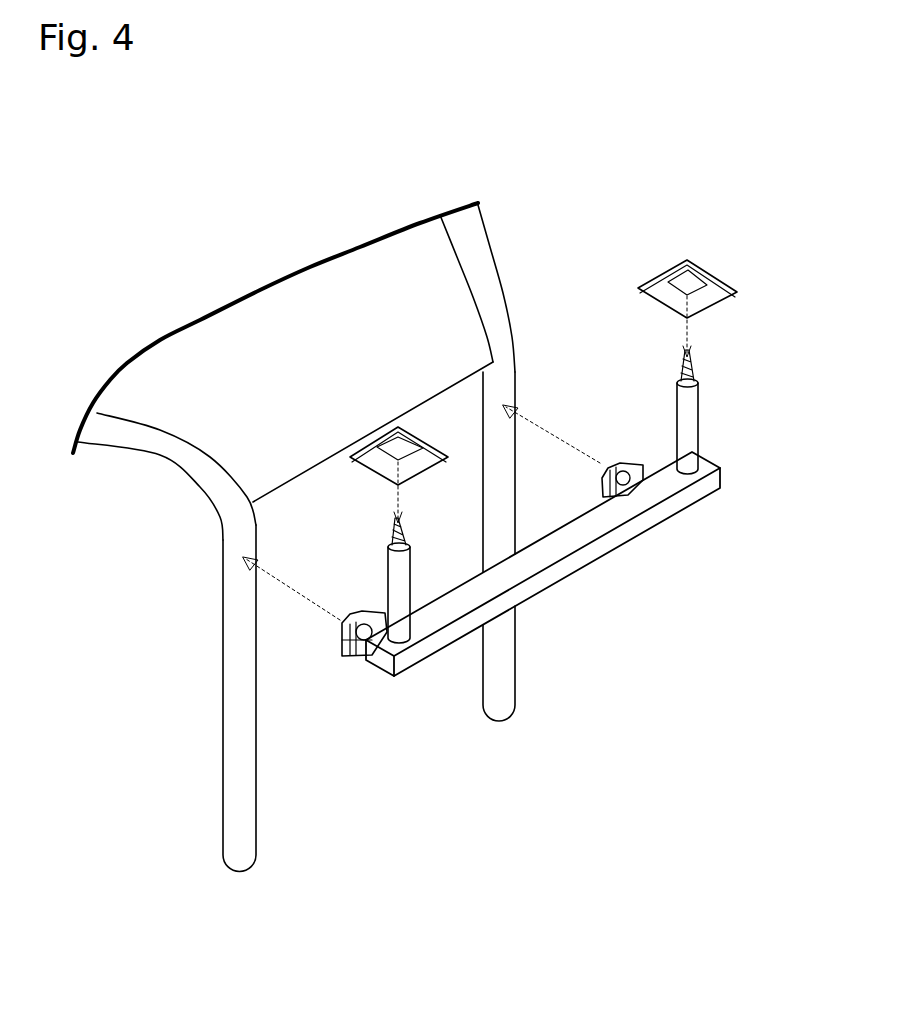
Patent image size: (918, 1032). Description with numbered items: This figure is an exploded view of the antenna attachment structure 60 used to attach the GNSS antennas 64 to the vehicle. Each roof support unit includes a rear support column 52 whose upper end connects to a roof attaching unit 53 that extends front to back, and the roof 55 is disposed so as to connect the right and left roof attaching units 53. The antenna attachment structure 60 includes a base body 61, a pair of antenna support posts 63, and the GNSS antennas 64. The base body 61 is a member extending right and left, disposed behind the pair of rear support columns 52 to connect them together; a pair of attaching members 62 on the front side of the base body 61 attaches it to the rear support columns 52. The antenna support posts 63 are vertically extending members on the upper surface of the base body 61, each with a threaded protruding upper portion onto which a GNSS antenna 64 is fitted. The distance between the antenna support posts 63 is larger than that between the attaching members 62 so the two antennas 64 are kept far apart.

The rear support column 52 is at (235, 747).
The roof attaching unit 53 is at (123, 440).
The roof 55 is at (198, 357).
The antenna attachment structure 60 is at (623, 228).
The base body 61 is at (582, 555).
The attaching member 62 is at (352, 658).
The antenna support post 63 is at (387, 583).
The GNSS antenna 64 is at (393, 447).